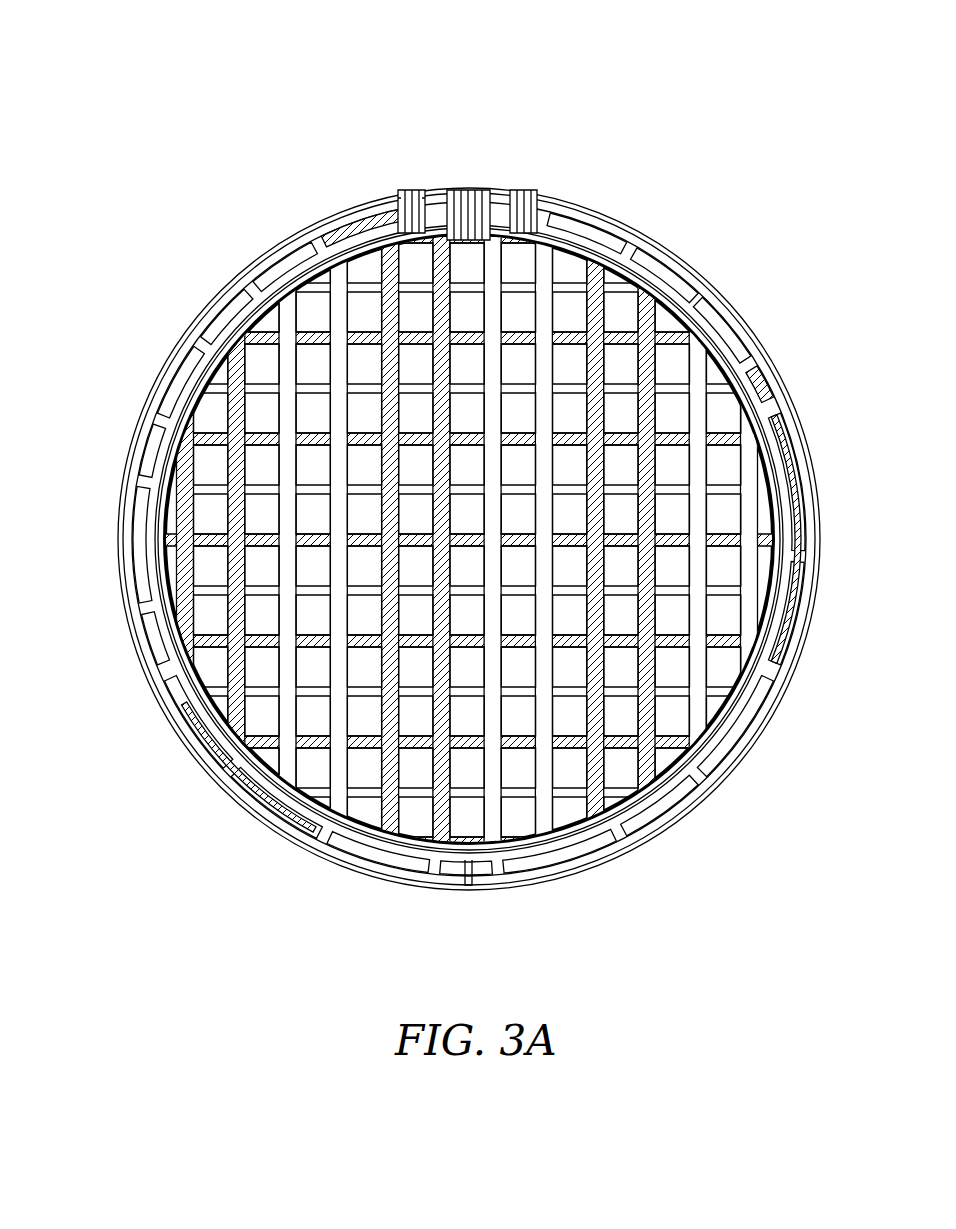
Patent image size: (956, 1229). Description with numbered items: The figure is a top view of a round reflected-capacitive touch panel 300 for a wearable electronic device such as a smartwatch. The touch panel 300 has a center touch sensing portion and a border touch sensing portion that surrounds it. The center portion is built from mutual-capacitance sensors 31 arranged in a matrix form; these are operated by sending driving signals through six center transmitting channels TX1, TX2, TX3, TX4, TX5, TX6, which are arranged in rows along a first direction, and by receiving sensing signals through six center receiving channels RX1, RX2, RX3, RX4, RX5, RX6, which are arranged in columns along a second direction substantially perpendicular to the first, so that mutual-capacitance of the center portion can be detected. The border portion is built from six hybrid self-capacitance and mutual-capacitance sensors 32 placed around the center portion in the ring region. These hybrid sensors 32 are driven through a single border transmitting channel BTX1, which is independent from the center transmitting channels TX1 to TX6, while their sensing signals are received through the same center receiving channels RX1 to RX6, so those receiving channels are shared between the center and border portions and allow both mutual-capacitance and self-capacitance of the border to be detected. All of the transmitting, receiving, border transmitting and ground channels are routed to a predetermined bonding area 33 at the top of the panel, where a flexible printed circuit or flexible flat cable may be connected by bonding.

The reflected-capacitive touch panel 300 is at (96, 92).
The mutual-capacitance sensor 31 is at (568, 272).
The hybrid self-capacitance and mutual-capacitance sensor 32 is at (762, 380).
The predetermined bonding area 33 is at (468, 178).
The border transmitting channel BTX1 is at (356, 235).
The center transmitting channel TX1 is at (314, 287).
The center transmitting channel TX2 is at (214, 388).
The center transmitting channel TX3 is at (177, 489).
The center transmitting channel TX4 is at (177, 590).
The center transmitting channel TX5 is at (214, 690).
The center transmitting channel TX6 is at (315, 792).
The center receiving channel RX1 is at (212, 645).
The center receiving channel RX2 is at (314, 743).
The center receiving channel RX3 is at (416, 743).
The center receiving channel RX4 is at (518, 743).
The center receiving channel RX5 is at (620, 743).
The center receiving channel RX6 is at (722, 645).